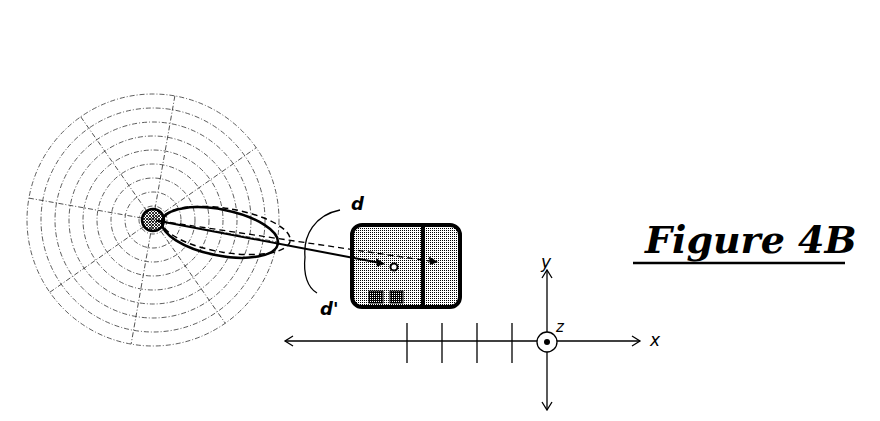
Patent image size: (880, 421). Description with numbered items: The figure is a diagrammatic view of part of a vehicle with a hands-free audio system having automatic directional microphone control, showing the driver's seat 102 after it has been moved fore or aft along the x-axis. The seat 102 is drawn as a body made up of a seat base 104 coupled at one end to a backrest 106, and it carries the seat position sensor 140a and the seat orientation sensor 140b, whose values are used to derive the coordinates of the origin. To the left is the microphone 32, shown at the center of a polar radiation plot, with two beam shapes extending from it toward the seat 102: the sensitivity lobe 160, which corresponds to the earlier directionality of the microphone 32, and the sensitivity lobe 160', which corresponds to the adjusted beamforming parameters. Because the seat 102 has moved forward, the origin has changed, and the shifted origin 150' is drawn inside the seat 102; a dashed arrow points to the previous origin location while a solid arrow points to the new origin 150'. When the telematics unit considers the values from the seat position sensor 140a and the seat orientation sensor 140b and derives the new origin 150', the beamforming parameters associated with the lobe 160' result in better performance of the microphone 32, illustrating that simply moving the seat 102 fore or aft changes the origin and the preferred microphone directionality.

The microphone 32 is at (156, 213).
The sensitivity lobe 160 is at (270, 217).
The sensitivity lobe 160' is at (298, 259).
The driver's seat 102 is at (461, 236).
The seat base 104 is at (392, 232).
The backrest 106 is at (442, 232).
The origin 150' is at (459, 259).
The seat position sensor 140a is at (373, 310).
The seat orientation sensor 140b is at (392, 310).